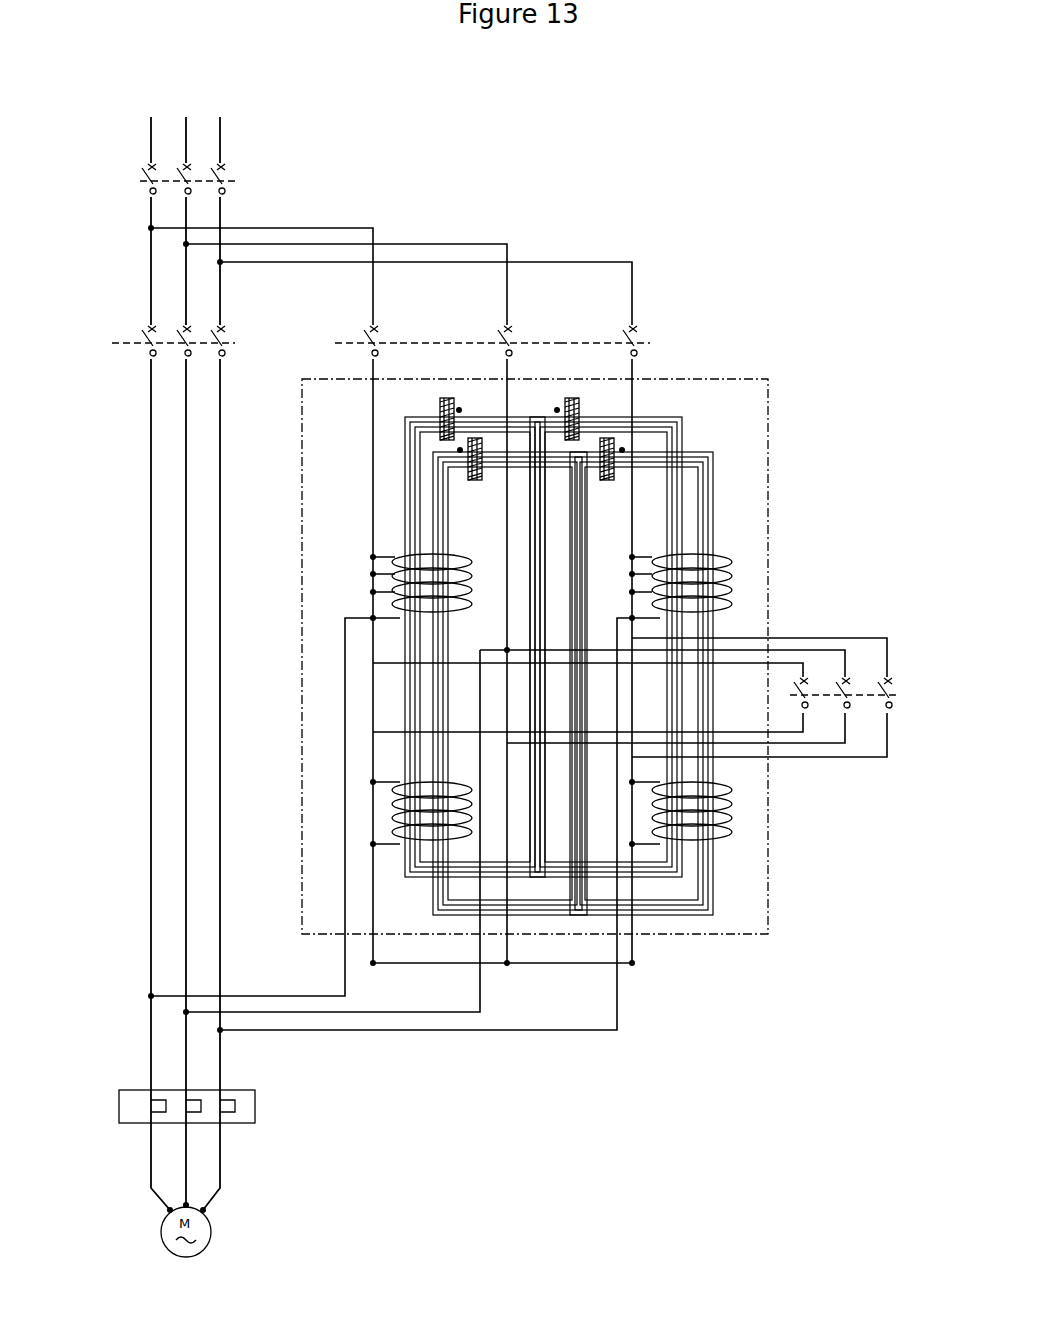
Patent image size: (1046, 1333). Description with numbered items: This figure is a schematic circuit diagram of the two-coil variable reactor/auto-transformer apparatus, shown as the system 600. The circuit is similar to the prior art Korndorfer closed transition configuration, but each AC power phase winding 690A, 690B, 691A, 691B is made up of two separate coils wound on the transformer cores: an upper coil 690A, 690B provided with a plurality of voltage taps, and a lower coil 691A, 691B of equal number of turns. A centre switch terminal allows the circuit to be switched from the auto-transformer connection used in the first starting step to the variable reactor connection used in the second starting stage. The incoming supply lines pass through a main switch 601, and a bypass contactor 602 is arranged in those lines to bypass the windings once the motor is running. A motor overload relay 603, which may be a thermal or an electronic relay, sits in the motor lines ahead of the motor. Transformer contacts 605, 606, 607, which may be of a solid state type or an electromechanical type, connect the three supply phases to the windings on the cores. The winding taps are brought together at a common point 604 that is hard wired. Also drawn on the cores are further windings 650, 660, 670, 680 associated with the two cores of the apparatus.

The system 600 is at (845, 205).
The main switch 601 is at (228, 176).
The bypass contactor 602 is at (112, 338).
The motor overload relay 603 is at (248, 1103).
The common point 604 is at (893, 697).
The transformer contact 605 is at (373, 336).
The transformer contact 606 is at (508, 336).
The transformer contact 607 is at (632, 338).
The control winding 650 is at (438, 410).
The control winding 660 is at (583, 428).
The control winding 670 is at (470, 447).
The control winding 680 is at (625, 450).
The upper coil 690A is at (372, 580).
The upper coil 690B is at (392, 822).
The lower coil 691A is at (728, 602).
The lower coil 691B is at (740, 815).